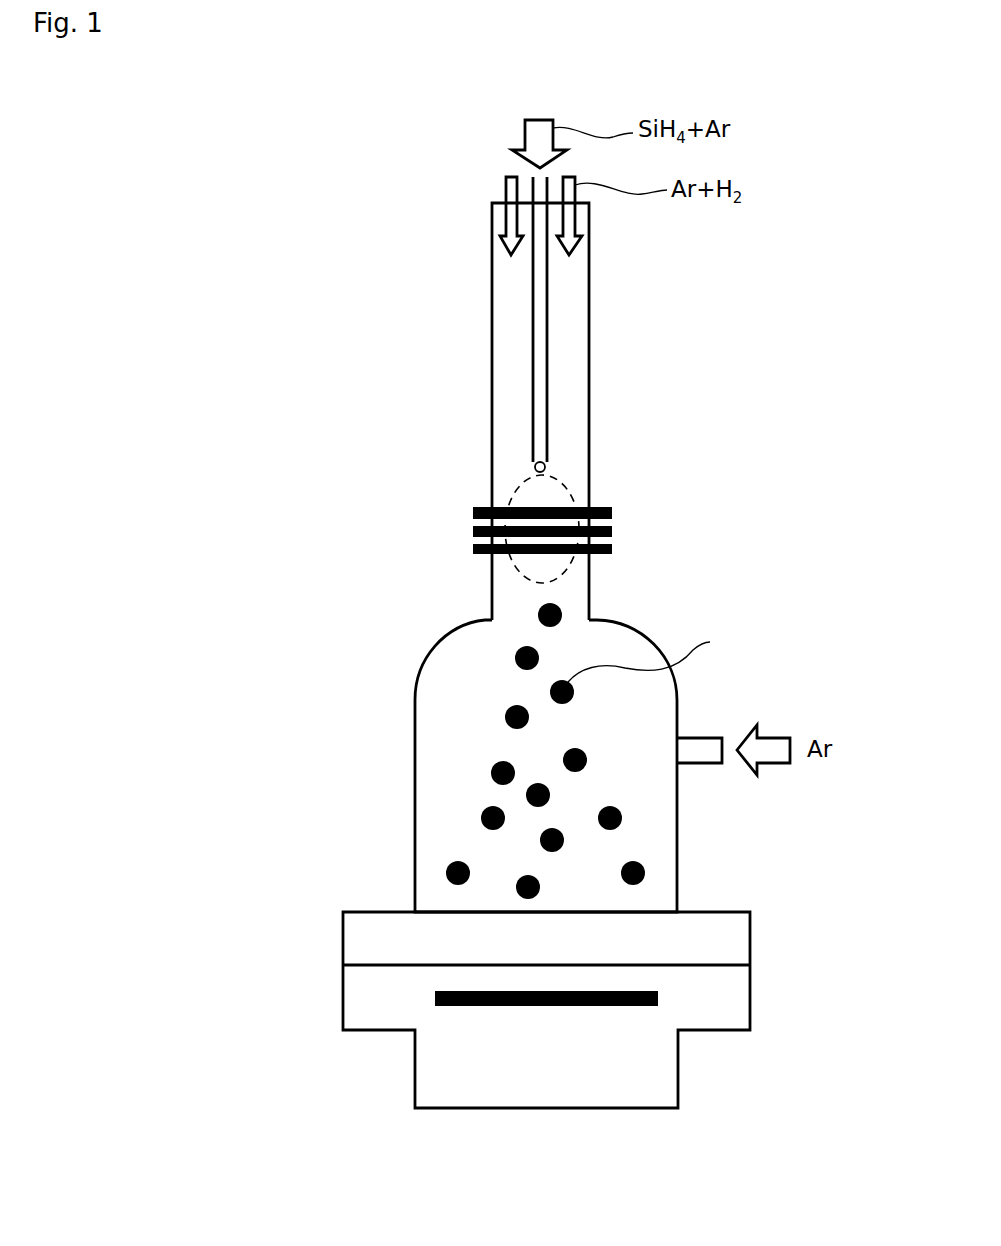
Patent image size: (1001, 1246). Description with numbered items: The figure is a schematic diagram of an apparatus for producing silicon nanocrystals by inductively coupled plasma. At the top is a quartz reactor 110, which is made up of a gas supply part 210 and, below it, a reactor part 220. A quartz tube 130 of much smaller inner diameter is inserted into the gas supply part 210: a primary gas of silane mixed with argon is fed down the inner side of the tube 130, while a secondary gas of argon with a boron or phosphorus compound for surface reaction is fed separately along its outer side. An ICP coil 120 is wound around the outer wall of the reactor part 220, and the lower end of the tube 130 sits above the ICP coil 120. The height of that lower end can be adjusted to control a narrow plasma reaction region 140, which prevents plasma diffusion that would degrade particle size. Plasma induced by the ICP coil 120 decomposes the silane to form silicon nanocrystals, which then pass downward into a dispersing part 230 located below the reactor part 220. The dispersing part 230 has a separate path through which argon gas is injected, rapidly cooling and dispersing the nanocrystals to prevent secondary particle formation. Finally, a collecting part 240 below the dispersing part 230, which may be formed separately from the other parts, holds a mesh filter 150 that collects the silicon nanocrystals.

The reactor 110 is at (589, 403).
The ICP coil 120 is at (612, 530).
The tube 130 is at (540, 337).
The plasma reaction region 140 is at (570, 484).
The mesh filter 150 is at (658, 997).
The gas supply part 210 is at (467, 203).
The reactor part 220 is at (468, 482).
The dispersing part 230 is at (395, 627).
The collecting part 240 is at (327, 913).